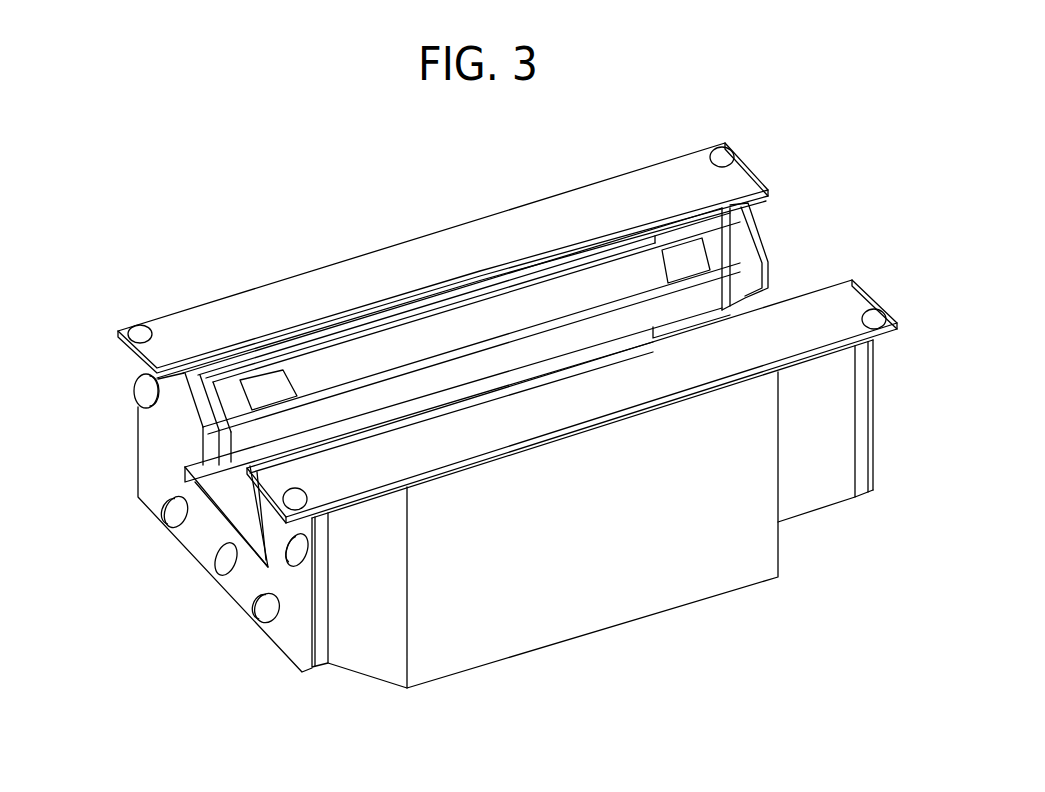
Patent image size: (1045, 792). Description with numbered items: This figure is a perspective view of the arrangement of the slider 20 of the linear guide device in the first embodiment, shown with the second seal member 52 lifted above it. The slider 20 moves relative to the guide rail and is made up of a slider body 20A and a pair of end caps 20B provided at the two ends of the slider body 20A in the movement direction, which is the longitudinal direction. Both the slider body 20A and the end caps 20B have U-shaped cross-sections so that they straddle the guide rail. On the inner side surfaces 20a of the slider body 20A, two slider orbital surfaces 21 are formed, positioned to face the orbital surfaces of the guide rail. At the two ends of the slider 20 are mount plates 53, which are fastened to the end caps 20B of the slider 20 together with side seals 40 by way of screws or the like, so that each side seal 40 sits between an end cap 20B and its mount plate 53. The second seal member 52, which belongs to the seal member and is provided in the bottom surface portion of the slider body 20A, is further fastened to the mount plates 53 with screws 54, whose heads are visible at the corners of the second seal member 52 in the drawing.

The slider 20 is at (484, 541).
The slider body 20A is at (613, 603).
The end caps 20B is at (352, 630).
The inner side surfaces 20a is at (185, 468).
The slider orbital surfaces 21 is at (208, 409).
The side seals 40 is at (322, 640).
The second seal member 52 is at (398, 250).
The mount plates 53 is at (197, 540).
The screws 54 is at (136, 328).